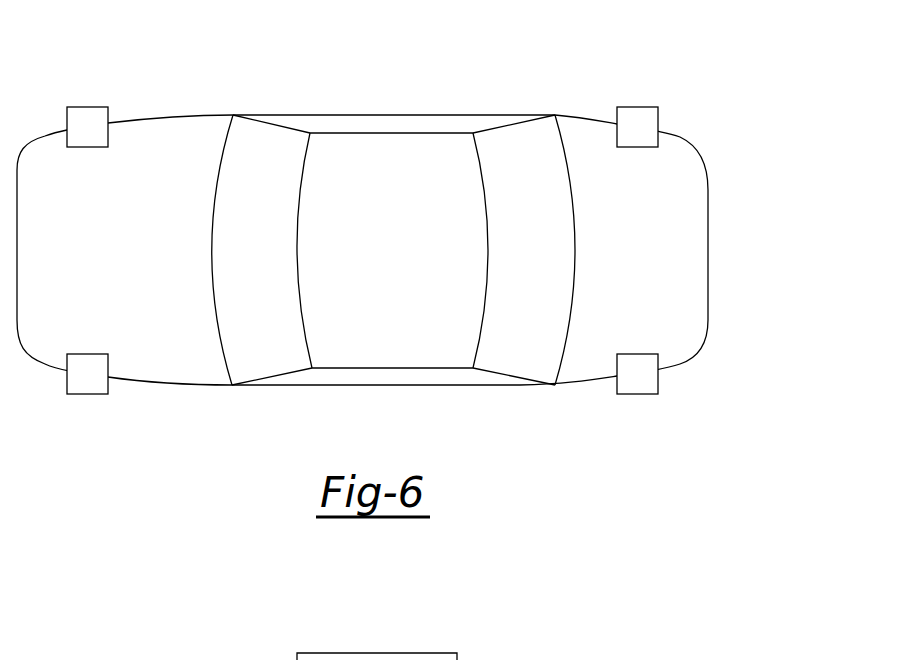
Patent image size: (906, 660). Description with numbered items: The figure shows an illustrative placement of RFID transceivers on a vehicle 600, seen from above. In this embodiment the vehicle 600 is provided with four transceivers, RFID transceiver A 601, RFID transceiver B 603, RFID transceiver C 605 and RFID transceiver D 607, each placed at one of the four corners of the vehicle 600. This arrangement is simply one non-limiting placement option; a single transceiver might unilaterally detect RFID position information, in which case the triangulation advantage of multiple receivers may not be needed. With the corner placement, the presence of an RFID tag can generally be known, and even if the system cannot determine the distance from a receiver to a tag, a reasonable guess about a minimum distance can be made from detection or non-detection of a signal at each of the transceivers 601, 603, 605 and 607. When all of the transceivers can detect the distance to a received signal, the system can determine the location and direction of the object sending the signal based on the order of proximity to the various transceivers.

The vehicle 600 is at (709, 252).
The RFID transceiver A 601 is at (638, 107).
The RFID transceiver B 603 is at (637, 394).
The RFID transceiver C 605 is at (88, 107).
The RFID transceiver D 607 is at (87, 394).